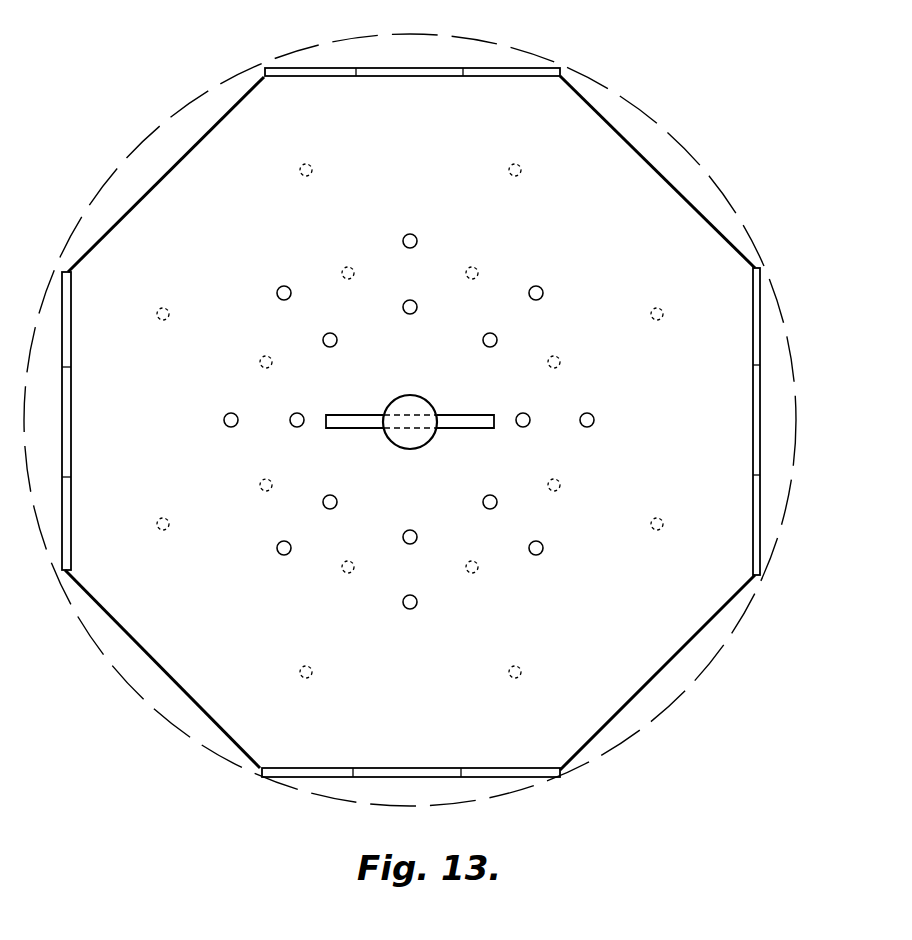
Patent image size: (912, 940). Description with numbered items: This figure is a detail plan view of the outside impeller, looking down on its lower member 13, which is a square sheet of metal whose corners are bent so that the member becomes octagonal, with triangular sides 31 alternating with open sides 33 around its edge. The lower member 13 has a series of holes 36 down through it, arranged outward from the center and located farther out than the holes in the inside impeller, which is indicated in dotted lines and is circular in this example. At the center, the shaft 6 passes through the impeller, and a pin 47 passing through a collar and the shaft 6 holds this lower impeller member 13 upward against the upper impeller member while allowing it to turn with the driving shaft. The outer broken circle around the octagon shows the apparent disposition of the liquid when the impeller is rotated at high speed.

The lower member of the outside impeller 13 is at (627, 233).
The triangular sides 31 is at (510, 72).
The open sides 33 is at (190, 150).
The holes 36 is at (543, 290).
The shaft 6 is at (407, 405).
The pin 47 is at (352, 420).